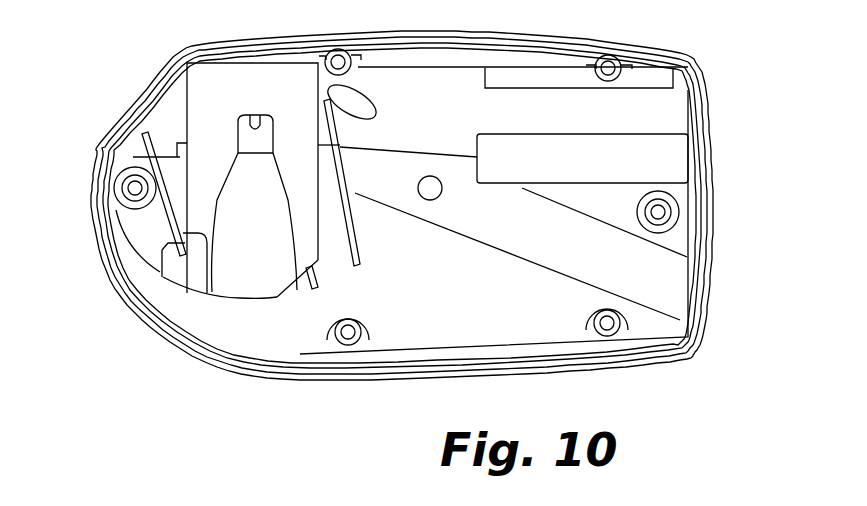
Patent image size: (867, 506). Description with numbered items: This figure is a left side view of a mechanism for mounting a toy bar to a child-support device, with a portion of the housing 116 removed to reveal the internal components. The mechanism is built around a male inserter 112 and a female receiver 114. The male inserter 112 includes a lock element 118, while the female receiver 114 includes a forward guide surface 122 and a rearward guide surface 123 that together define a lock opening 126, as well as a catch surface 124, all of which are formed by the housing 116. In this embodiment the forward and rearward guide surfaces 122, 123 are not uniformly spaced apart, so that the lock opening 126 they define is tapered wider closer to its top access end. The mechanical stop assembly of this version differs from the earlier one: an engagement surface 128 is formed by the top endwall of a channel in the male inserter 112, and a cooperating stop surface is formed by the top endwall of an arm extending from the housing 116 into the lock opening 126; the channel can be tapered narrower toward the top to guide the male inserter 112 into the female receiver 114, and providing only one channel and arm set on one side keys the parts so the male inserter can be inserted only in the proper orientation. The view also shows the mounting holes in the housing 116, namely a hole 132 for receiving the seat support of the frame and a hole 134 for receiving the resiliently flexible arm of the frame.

The male inserter 112 is at (185, 108).
The female receiver 114 is at (358, 280).
The housing 116 is at (541, 34).
The lock element 118 is at (172, 263).
The forward guide surface 122 is at (353, 262).
The rearward guide surface 123 is at (192, 252).
The catch surface 124 is at (183, 258).
The lock opening 126 is at (323, 285).
The engagement surface 128 is at (259, 127).
The hole 132 is at (128, 128).
The hole 134 is at (212, 42).